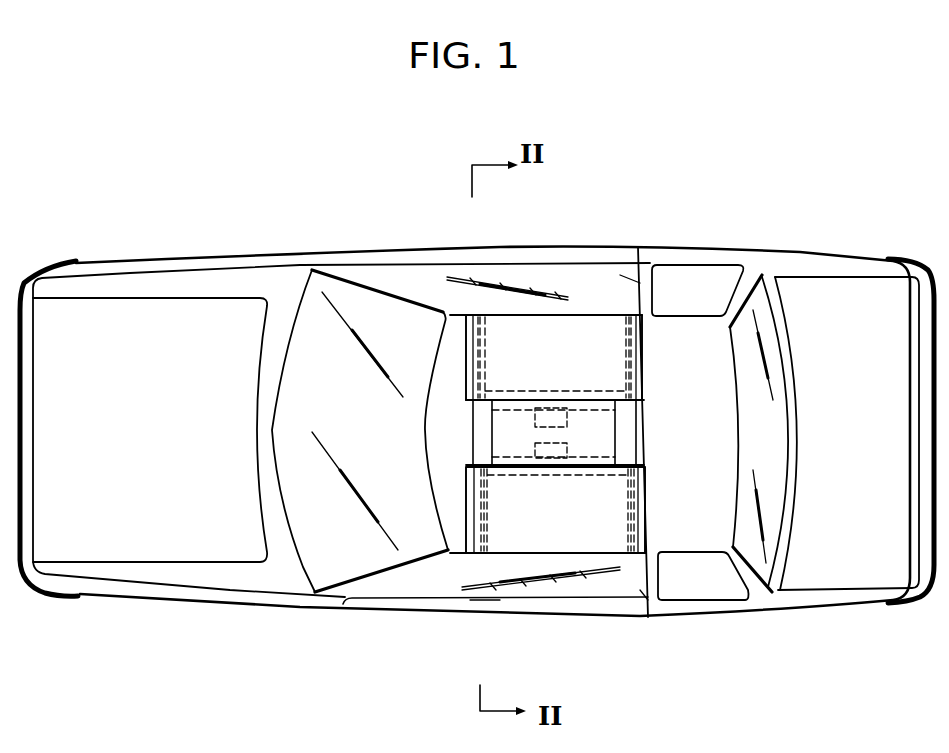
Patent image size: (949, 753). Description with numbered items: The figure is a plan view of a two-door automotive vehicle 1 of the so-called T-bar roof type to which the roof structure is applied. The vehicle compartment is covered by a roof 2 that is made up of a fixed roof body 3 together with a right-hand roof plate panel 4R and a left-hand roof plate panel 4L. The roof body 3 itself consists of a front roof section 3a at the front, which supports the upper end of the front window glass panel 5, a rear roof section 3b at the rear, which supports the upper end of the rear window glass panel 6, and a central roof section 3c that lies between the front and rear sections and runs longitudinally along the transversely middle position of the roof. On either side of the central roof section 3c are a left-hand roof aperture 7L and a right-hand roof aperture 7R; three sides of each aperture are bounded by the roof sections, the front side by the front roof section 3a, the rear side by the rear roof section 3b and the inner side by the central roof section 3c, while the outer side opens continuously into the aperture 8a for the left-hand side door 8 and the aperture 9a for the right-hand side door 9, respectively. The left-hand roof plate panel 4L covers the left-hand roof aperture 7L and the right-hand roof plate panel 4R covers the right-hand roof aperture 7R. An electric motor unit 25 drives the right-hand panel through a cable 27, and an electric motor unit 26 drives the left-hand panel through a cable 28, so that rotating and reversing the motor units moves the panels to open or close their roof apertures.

The automotive vehicle 1 is at (336, 196).
The roof 2 is at (660, 326).
The roof body 3 is at (452, 318).
The front roof section 3a is at (440, 375).
The rear roof section 3b is at (727, 410).
The central roof section 3c is at (500, 613).
The right-hand roof plate panel 4R is at (633, 362).
The left-hand roof plate panel 4L is at (617, 517).
The front window glass panel 5 is at (313, 563).
The rear window glass panel 6 is at (752, 300).
The right-hand roof aperture 7R is at (625, 328).
The left-hand roof aperture 7L is at (628, 505).
The left-hand side door 8 is at (498, 258).
The aperture for left-hand side door 8a is at (638, 283).
The right-hand side door 9 is at (499, 608).
The aperture for right-hand side door 9a is at (649, 600).
The electric motor unit 25 is at (567, 417).
The electric motor unit 26 is at (536, 451).
The cable 27 is at (476, 348).
The cable 28 is at (484, 503).